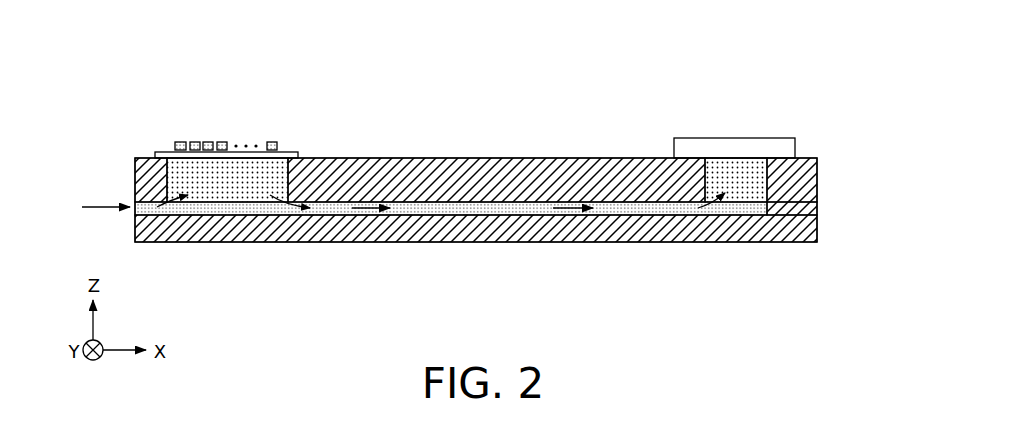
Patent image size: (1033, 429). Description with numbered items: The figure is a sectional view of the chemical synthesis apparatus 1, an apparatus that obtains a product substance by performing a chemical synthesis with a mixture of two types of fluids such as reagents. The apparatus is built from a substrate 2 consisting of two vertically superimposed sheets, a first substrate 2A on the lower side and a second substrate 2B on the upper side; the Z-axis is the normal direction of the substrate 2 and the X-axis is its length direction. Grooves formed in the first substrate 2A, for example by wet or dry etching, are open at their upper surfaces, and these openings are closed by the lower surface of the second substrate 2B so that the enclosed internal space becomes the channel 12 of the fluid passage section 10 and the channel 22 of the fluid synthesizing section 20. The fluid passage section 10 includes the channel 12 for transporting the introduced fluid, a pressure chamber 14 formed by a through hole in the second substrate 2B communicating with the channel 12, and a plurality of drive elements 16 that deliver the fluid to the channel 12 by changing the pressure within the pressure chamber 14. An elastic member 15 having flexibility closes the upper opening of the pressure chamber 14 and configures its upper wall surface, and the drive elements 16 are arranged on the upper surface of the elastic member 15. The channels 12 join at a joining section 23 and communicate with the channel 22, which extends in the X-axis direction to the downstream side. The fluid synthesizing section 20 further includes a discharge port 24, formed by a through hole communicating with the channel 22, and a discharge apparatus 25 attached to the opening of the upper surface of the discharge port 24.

The chemical synthesis apparatus 1 is at (800, 76).
The substrate 2 is at (867, 170).
The first substrate 2A is at (818, 226).
The second substrate 2B is at (818, 177).
The fluid passage section 10 is at (340, 103).
The channel 12 is at (330, 217).
The pressure chamber 14 is at (305, 157).
The elastic member 15 is at (290, 152).
The drive elements 16 is at (175, 135).
The fluid synthesizing section 20 is at (652, 104).
The channel 22 is at (616, 217).
The joining section 23 is at (440, 217).
The discharge port 24 is at (700, 190).
The discharge apparatus 25 is at (707, 138).